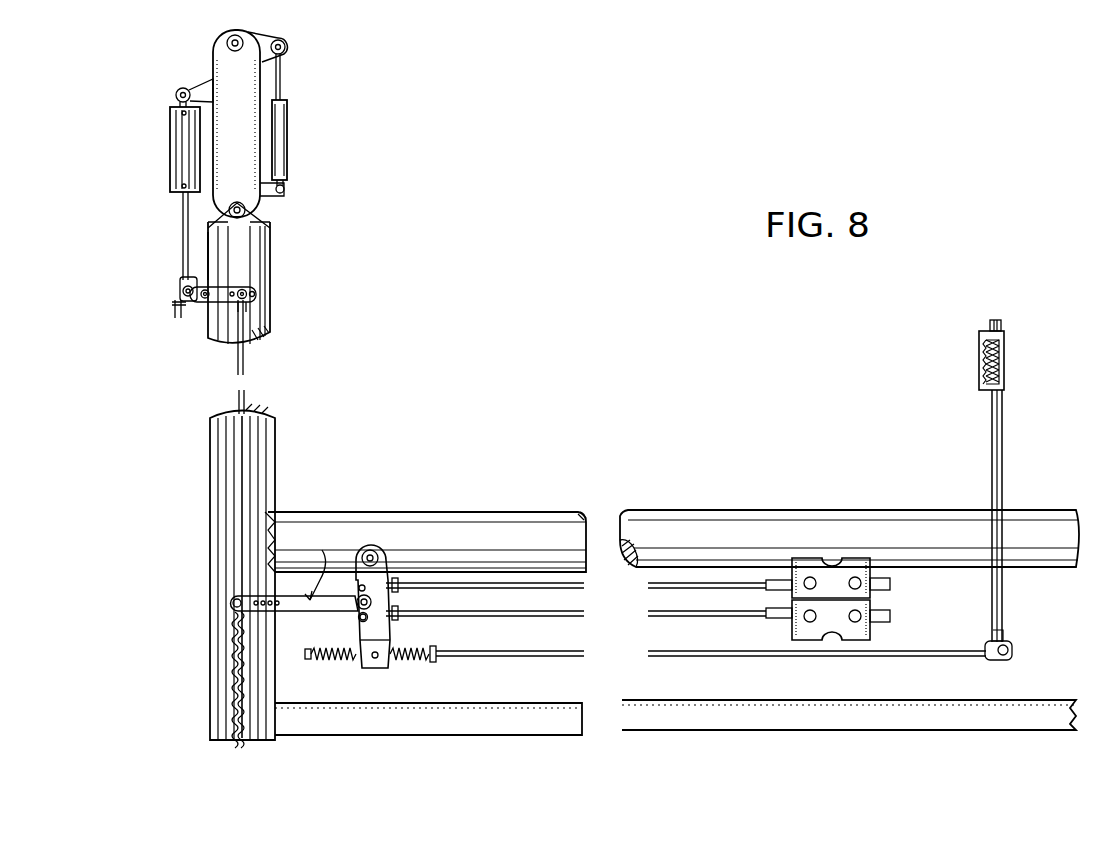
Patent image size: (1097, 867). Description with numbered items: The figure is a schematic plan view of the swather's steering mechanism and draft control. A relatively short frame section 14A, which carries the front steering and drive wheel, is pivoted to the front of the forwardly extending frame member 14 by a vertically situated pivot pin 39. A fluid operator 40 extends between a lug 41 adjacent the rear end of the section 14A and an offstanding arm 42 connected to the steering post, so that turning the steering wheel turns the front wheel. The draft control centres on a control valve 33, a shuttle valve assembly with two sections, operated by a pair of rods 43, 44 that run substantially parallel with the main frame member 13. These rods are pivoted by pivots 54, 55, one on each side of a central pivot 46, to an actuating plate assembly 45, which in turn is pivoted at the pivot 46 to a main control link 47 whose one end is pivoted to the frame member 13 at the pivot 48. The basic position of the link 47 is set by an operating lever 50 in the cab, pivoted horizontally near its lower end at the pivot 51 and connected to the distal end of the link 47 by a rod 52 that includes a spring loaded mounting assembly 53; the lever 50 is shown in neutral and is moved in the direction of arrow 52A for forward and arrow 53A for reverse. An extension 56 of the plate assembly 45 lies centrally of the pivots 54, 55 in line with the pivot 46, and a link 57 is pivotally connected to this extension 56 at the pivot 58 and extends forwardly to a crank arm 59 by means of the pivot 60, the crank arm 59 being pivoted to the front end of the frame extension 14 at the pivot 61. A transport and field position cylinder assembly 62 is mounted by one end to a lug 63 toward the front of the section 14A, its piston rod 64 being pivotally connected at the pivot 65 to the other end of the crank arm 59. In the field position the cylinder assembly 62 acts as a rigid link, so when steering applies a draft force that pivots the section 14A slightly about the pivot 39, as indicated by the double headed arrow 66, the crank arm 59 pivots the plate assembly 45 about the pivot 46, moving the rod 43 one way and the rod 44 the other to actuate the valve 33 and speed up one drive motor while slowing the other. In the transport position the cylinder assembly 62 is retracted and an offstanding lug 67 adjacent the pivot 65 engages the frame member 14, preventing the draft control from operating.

The main frame member 13 is at (497, 512).
The forwardly extending frame member 14 is at (266, 430).
The frame section 14A is at (250, 130).
The control valve 33 is at (866, 560).
The pivot pin 39 is at (262, 213).
The fluid operator 40 is at (288, 142).
The lug 41 is at (284, 192).
The offstanding arm 42 is at (287, 47).
The rod 43 is at (723, 588).
The rod 44 is at (738, 612).
The actuating plate assembly 45 is at (309, 565).
The pivot 46 is at (378, 601).
The main control link 47 is at (385, 568).
The pivot 48 is at (381, 531).
The operating lever 50 is at (1000, 422).
The pivot 51 is at (1017, 662).
The rod 52 is at (545, 654).
The arrow 52A is at (1047, 380).
The spring loaded mounting assembly 53 is at (398, 655).
The arrow 53A is at (953, 371).
The pivot 54 is at (382, 590).
The pivot 55 is at (360, 622).
The extension 56 is at (294, 623).
The link 57 is at (245, 452).
The pivot 58 is at (230, 602).
The crank arm 59 is at (216, 322).
The pivot 60 is at (258, 296).
The pivot 61 is at (205, 256).
The transport and field position cylinder assembly 62 is at (184, 151).
The lug 63 is at (200, 82).
The piston rod 64 is at (185, 210).
The pivot 65 is at (180, 282).
The double headed arrow 66 is at (256, 82).
The offstanding lug 67 is at (190, 303).